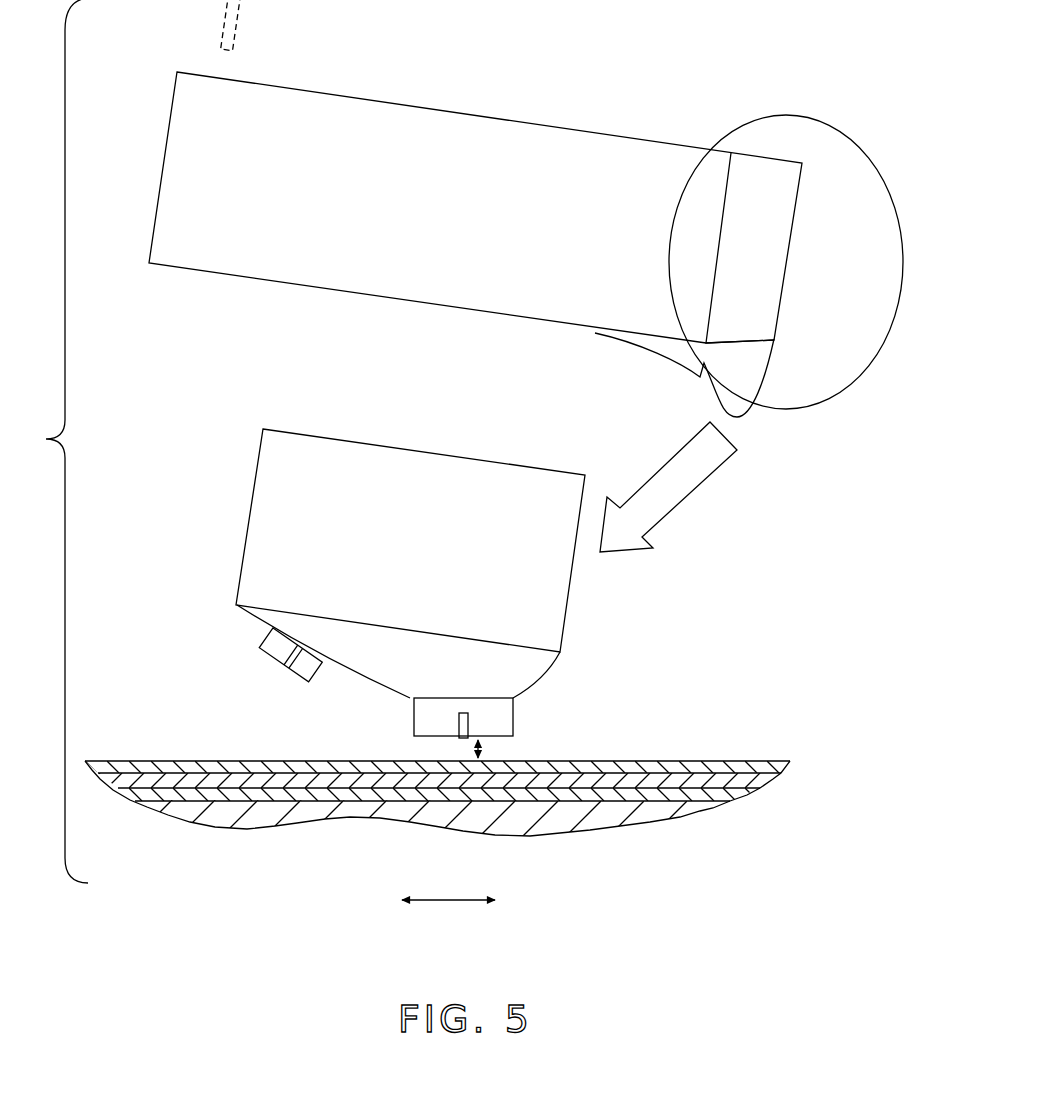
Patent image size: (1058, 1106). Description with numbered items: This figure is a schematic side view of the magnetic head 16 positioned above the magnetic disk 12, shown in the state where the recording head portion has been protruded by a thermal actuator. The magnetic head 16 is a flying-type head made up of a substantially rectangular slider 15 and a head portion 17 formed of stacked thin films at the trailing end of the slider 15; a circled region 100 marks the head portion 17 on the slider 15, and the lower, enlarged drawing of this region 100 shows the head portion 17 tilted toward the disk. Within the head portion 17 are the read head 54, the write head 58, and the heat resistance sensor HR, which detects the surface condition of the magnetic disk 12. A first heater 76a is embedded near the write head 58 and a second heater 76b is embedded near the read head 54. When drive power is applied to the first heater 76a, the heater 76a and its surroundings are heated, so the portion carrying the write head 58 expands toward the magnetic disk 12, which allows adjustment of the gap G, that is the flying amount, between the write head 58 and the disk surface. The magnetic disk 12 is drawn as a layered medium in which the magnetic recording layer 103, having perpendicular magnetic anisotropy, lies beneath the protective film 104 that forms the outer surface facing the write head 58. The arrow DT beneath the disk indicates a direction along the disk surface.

The magnetic disk 12 is at (458, 760).
The slider 15 is at (367, 268).
The magnetic head 16 is at (498, 357).
The head portion 17 is at (777, 250).
The read head 54 is at (263, 650).
The write head 58 is at (515, 713).
The heater 76a is at (487, 560).
The heater 76b is at (340, 544).
The curled portion 100 is at (845, 130).
The magnetic recording layer 103 is at (753, 780).
The protective film 104 is at (758, 762).
The gap G is at (483, 747).
The heat resistance sensor HR is at (363, 668).
The transport direction DT is at (448, 884).